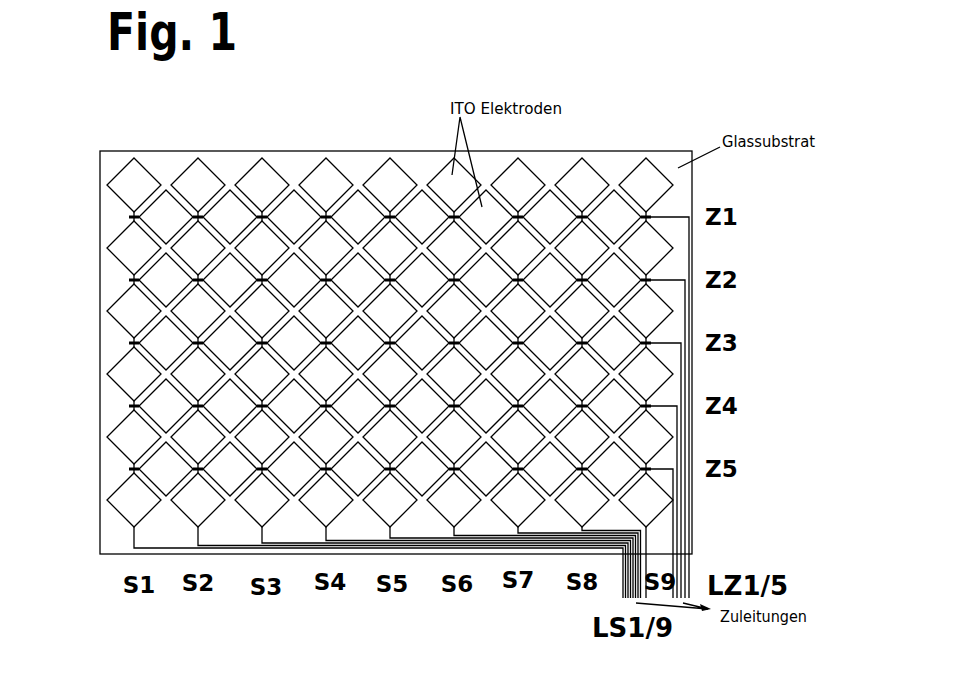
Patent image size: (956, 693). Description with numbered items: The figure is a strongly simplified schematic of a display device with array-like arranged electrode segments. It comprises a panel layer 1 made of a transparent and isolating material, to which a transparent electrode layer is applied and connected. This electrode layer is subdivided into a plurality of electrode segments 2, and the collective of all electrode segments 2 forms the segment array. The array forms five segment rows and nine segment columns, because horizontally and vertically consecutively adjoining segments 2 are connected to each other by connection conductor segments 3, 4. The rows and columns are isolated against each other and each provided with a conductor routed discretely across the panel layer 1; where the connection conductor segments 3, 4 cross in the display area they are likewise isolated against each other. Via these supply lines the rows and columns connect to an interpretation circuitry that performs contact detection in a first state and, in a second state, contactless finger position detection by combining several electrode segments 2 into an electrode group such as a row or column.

The panel layer 1 is at (232, 157).
The electrode segments 2 is at (265, 177).
The connection conductor segment 3 is at (263, 214).
The connection conductor segment 4 is at (133, 217).